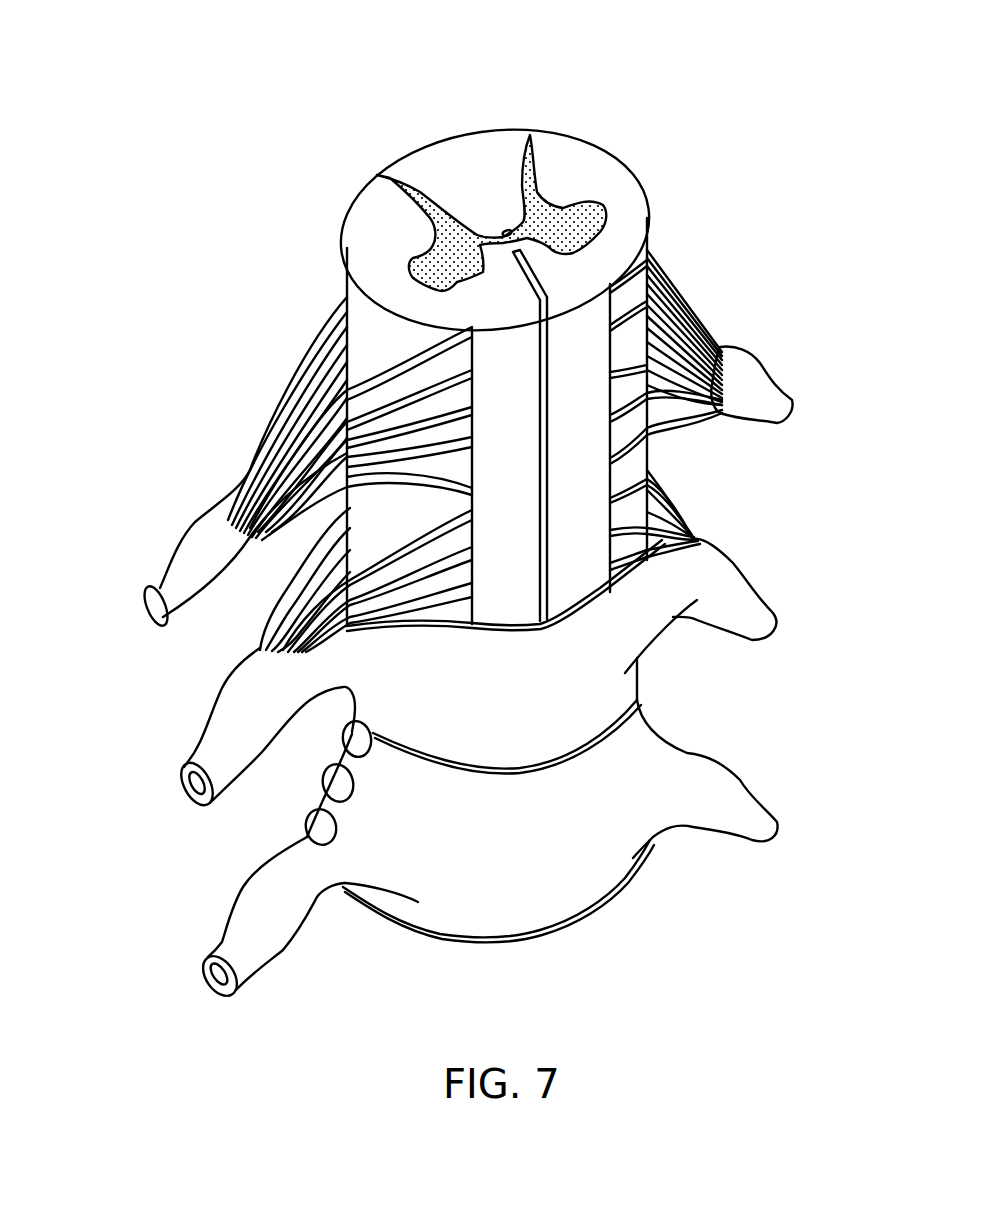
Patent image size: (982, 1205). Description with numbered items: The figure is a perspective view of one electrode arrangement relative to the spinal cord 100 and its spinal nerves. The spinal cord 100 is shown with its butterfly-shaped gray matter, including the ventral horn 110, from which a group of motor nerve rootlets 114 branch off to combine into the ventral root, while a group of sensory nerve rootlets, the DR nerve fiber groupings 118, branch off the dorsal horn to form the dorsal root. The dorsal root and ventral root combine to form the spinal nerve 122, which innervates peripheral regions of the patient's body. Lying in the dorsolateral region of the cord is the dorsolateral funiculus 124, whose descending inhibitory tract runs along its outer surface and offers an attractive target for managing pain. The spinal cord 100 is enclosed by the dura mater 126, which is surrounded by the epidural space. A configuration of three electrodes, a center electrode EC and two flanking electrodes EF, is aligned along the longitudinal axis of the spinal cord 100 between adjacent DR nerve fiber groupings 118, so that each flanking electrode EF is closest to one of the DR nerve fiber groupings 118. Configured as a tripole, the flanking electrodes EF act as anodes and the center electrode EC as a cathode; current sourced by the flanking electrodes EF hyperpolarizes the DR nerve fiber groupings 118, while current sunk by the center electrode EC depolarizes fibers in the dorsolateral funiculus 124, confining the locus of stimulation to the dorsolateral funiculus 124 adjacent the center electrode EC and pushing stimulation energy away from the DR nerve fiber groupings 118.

The spinal cord 100 is at (565, 95).
The dorsolateral funiculus 124 is at (387, 207).
The ventral horn 110 is at (430, 257).
The sensory nerve rootlets (DR nerve fiber groupings) 118 is at (298, 363).
The motor nerve rootlets 114 is at (317, 410).
The spinal nerve 122 is at (160, 582).
The dura mater 126 is at (570, 843).
The flanking electrodes EF is at (363, 730).
The center electrode EC is at (343, 783).